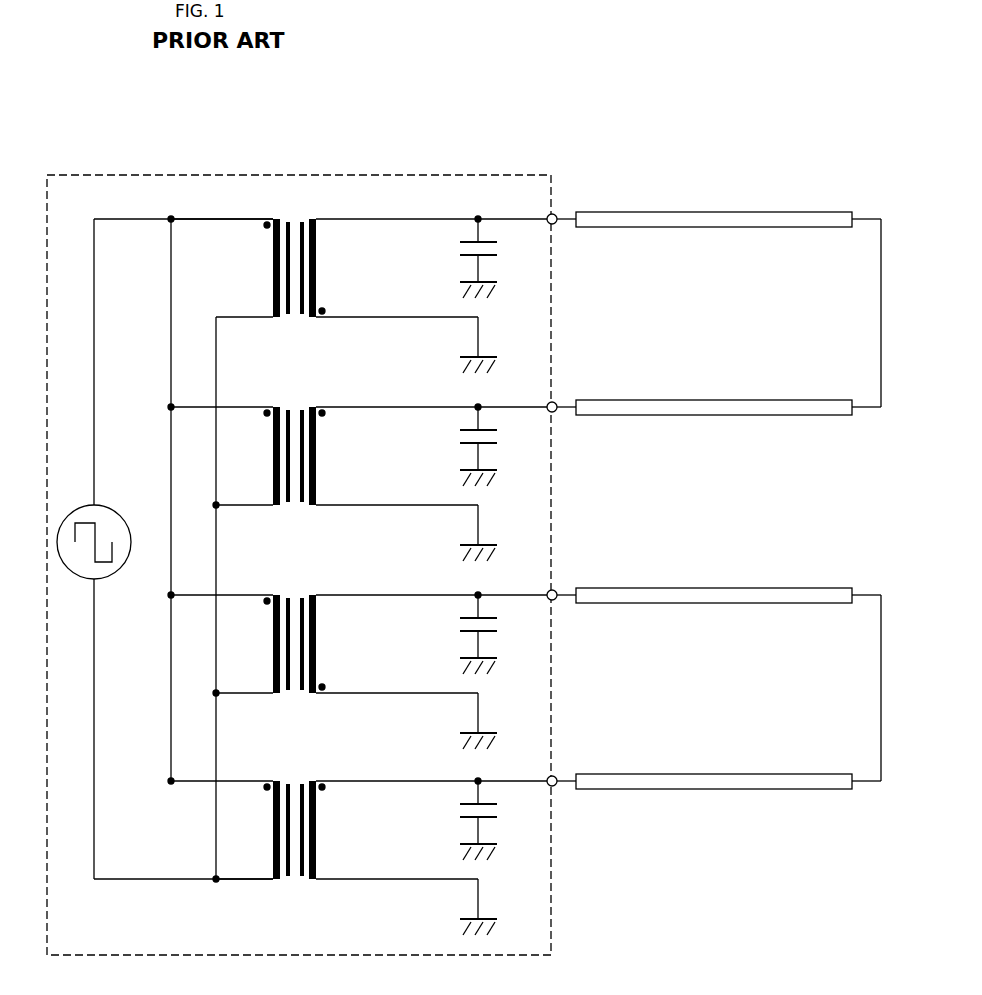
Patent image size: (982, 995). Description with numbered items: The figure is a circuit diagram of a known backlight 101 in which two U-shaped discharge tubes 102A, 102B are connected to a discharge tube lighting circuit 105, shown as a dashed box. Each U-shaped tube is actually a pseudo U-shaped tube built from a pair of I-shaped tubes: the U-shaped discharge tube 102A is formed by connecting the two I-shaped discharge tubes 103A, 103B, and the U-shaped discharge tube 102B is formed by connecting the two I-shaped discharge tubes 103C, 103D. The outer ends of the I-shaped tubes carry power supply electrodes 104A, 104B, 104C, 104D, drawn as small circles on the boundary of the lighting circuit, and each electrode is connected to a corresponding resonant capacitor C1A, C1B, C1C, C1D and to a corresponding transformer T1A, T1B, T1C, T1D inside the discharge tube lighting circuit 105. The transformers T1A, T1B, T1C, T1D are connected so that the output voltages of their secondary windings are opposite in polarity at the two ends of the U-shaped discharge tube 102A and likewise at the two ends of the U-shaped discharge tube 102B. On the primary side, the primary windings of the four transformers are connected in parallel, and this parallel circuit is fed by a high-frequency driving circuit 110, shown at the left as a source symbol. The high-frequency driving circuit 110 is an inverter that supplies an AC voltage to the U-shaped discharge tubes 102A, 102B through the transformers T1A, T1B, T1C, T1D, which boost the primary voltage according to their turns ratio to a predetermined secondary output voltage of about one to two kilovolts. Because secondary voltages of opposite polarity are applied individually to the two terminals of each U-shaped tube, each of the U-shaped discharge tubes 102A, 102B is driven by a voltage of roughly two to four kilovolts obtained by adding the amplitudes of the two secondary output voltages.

The backlight 101 is at (480, 106).
The discharge tube lighting circuit 105 is at (347, 174).
The high-frequency driving circuit 110 is at (107, 514).
The U-shaped discharge tube 102A is at (763, 182).
The U-shaped discharge tube 102B is at (768, 557).
The I-shaped discharge tube 103A is at (680, 212).
The I-shaped discharge tube 103B is at (747, 400).
The I-shaped discharge tube 103C is at (680, 589).
The I-shaped discharge tube 103D is at (747, 775).
The power supply electrode 104A is at (552, 213).
The power supply electrode 104B is at (552, 401).
The power supply electrode 104C is at (552, 589).
The power supply electrode 104D is at (552, 775).
The transformer T1A is at (294, 255).
The transformer T1B is at (294, 443).
The transformer T1C is at (294, 631).
The transformer T1D is at (294, 817).
The resonant capacitor C1A is at (498, 258).
The resonant capacitor C1B is at (498, 446).
The resonant capacitor C1C is at (499, 634).
The resonant capacitor C1D is at (499, 820).